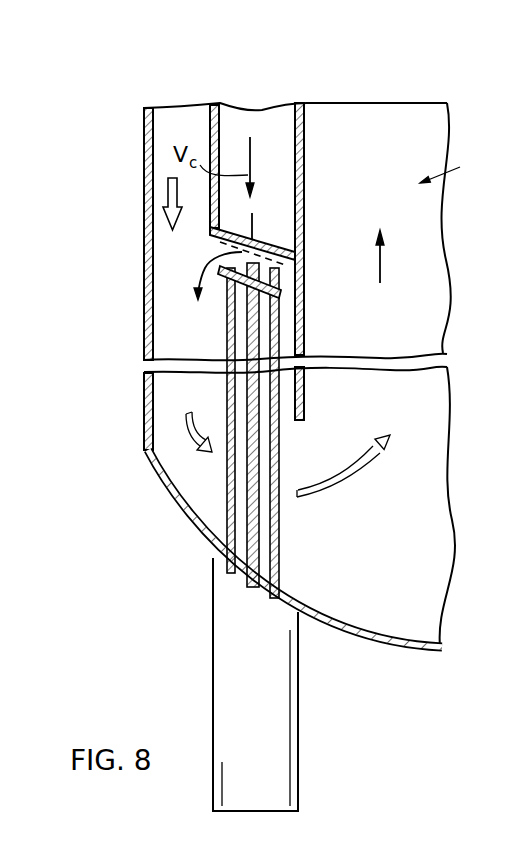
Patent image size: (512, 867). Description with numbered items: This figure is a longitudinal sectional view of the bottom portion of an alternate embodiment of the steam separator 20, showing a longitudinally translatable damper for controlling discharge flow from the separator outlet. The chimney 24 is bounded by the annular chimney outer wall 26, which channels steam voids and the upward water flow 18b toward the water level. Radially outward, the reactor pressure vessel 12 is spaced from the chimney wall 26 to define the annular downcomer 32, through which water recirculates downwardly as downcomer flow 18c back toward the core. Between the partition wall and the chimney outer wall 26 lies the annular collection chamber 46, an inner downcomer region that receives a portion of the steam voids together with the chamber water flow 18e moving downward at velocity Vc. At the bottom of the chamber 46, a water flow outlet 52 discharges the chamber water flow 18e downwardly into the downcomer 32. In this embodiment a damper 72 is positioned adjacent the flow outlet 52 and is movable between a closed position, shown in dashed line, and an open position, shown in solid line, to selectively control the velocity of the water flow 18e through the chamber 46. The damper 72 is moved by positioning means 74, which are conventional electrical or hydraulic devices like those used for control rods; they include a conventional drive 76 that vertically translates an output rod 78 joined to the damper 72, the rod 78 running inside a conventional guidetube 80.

The reactor pressure vessel 12 is at (146, 165).
The water flow 18b is at (381, 268).
The downcomer flow 18c is at (170, 198).
The chamber water flow 18e is at (244, 148).
The steam separator 20 is at (265, 98).
The chimney 24 is at (463, 375).
The chimney outer wall 26 is at (305, 210).
The downcomer 32 is at (203, 344).
The collection chamber 46 is at (287, 154).
The water flow outlet 52 is at (256, 238).
The damper 72 is at (284, 290).
The positioning means 74 is at (205, 600).
The drive 76 is at (299, 715).
The output rod 78 is at (262, 565).
The guidetube 80 is at (282, 464).